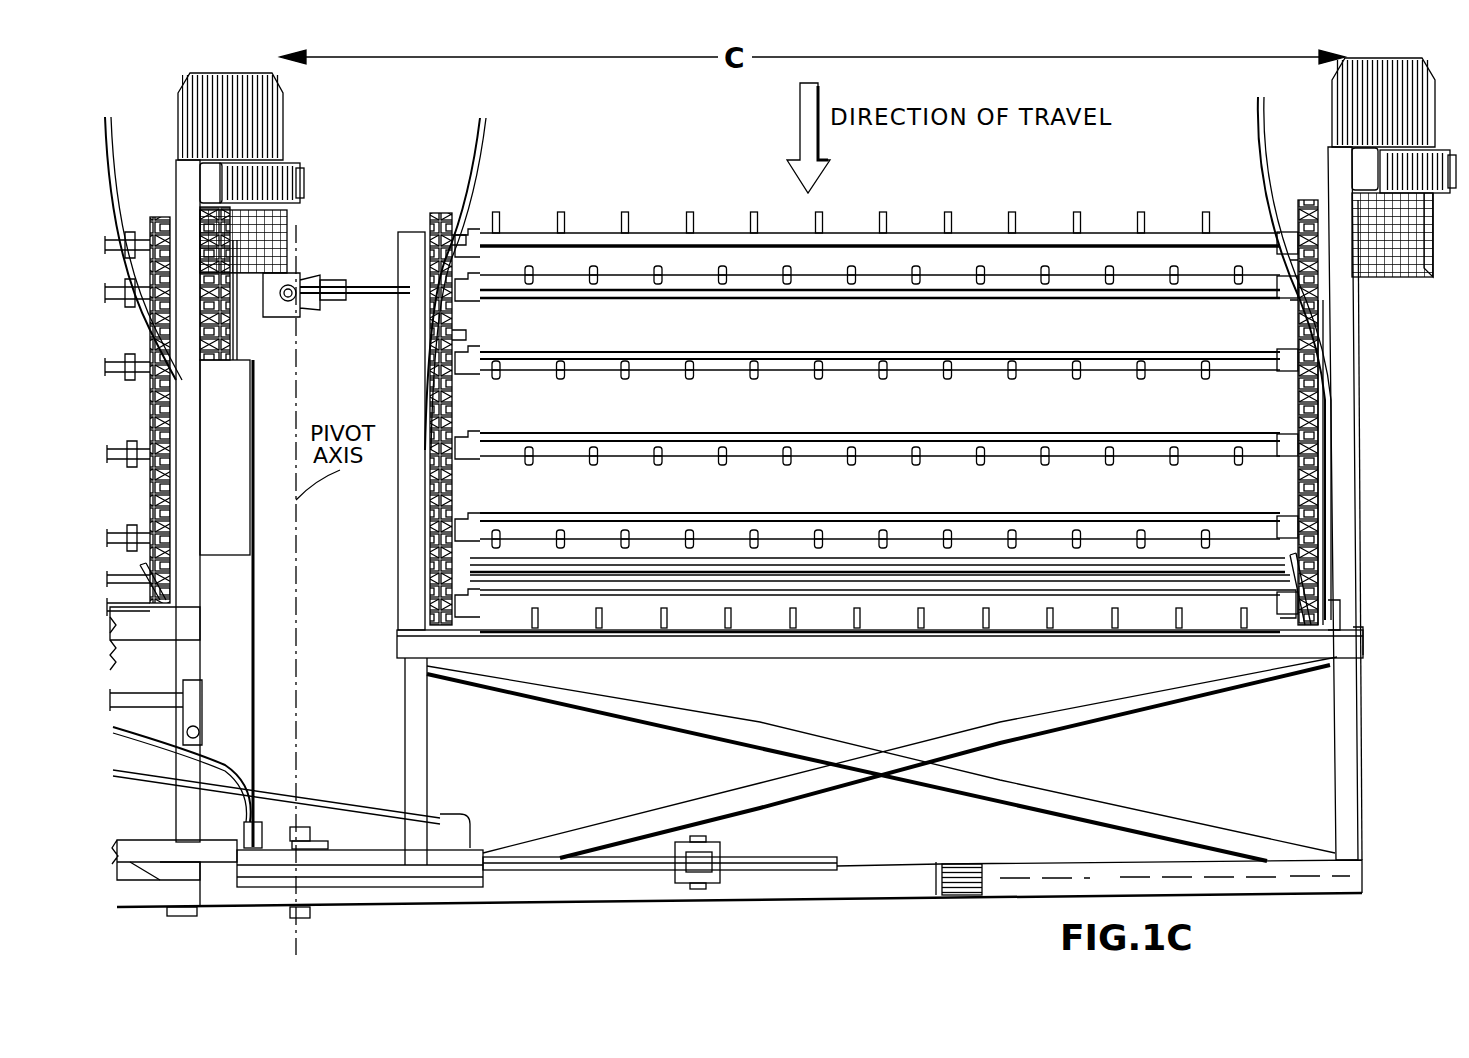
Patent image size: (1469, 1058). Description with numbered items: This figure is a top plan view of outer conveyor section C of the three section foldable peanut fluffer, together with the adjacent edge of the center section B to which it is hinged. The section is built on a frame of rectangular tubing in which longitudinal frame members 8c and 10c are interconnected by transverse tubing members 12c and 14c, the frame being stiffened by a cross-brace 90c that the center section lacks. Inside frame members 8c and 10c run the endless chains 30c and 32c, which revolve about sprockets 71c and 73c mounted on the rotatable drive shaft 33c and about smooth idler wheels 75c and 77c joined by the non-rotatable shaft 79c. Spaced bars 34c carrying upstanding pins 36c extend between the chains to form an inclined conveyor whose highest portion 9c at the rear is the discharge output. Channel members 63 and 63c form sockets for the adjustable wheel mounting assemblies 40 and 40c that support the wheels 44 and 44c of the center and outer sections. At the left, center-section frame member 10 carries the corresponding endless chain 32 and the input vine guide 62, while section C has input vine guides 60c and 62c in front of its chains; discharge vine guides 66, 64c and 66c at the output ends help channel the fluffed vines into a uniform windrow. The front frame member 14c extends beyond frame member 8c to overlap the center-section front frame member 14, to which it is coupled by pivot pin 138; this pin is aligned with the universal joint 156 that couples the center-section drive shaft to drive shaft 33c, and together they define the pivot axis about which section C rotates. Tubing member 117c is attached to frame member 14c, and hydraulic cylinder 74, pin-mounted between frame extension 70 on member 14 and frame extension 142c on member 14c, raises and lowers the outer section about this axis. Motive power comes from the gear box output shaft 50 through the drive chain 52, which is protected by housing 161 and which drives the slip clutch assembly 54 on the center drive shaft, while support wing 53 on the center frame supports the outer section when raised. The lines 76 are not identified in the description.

The rectangular tubing frame member 8c is at (405, 700).
The highest portion of the endless conveyor 9c is at (660, 225).
The rectangular tubing frame member 10 is at (178, 178).
The rectangular tubing frame member 10c is at (1348, 400).
The transverse rectangular tubing member 12c is at (810, 650).
The front frame member 14 is at (323, 843).
The front frame member 14c is at (1017, 880).
The endless chain 30c is at (452, 407).
The endless chain 32 is at (160, 453).
The endless chain 32c is at (1322, 475).
The drive shaft 33c is at (381, 290).
The spaced bars 34c is at (920, 240).
The upstanding pins 36c is at (1080, 232).
The adjustable wheel mounting assembly 40 is at (304, 178).
The adjustable wheel mounting assembly 40c is at (1395, 153).
The wheel 44 is at (258, 116).
The wheel 44c is at (1380, 72).
The output shaft 50 is at (160, 696).
The drive chain 52 is at (233, 253).
The support wing 53 is at (232, 230).
The slip clutch assembly 54 is at (240, 322).
The input vine guide 60c is at (415, 590).
The input vine guide 62 is at (165, 565).
The input vine guide 62c is at (1310, 582).
The channel member 63 is at (207, 162).
The channel member 63c is at (1350, 172).
The discharge vine guide 64c is at (478, 122).
The discharge vine guide 66 is at (110, 130).
The discharge vine guide 66c is at (1262, 147).
The frame extension 70 is at (188, 908).
The sprocket 71c is at (452, 327).
The sprocket 73c is at (1297, 300).
The hydraulic cylinder 74 is at (402, 885).
The idler wheel 75c is at (412, 552).
The supply hoses 76 is at (327, 803).
The idler wheel 77c is at (1322, 528).
The non-rotatable shaft 79c is at (958, 572).
The stiffening cross-brace 90c is at (1095, 805).
The rectangular tubing member 117c is at (598, 870).
The pivot pin 138 is at (305, 915).
The frame extension 142c is at (752, 872).
The universal joint 156 is at (305, 282).
The covering housing 161 is at (247, 543).